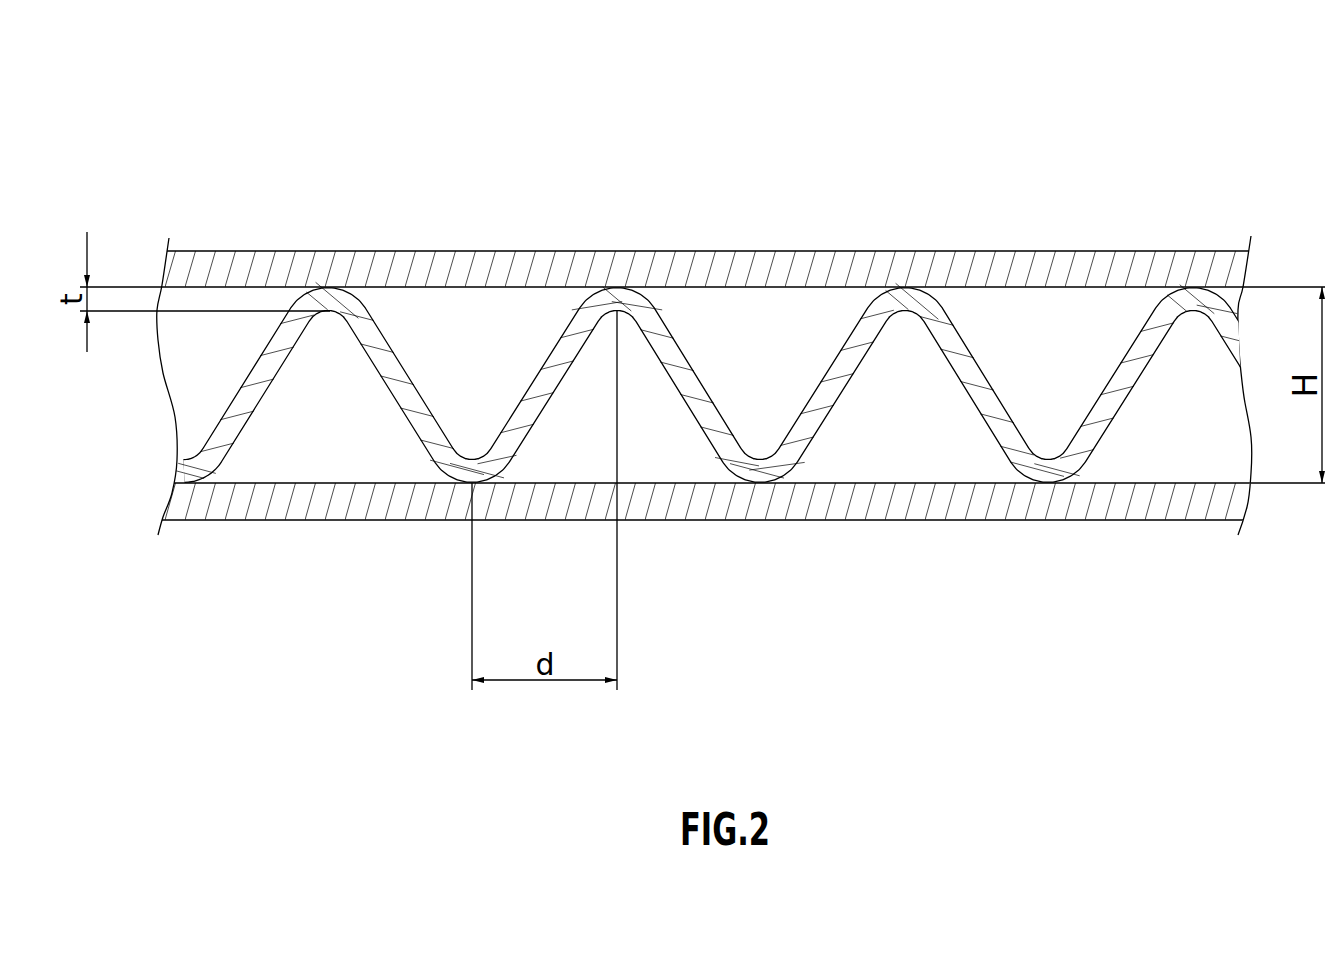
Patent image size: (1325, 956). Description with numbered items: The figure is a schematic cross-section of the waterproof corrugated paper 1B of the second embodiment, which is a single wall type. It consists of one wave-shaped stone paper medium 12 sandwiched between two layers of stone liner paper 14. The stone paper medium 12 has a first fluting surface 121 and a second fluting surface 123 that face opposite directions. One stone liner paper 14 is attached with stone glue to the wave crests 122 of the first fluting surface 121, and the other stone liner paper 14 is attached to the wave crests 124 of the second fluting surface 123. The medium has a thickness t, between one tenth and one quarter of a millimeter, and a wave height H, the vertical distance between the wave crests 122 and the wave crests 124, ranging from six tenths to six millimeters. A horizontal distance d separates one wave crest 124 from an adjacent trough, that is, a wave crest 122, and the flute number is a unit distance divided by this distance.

The waterproof corrugated paper 1B is at (176, 176).
The stone paper medium 12 is at (690, 392).
The stone liner paper 14 is at (1023, 263).
The first fluting surface 121 is at (380, 377).
The wave crests of the first fluting surface 122 is at (471, 484).
The second fluting surface 123 is at (546, 360).
The wave crests of the second fluting surface 124 is at (617, 287).